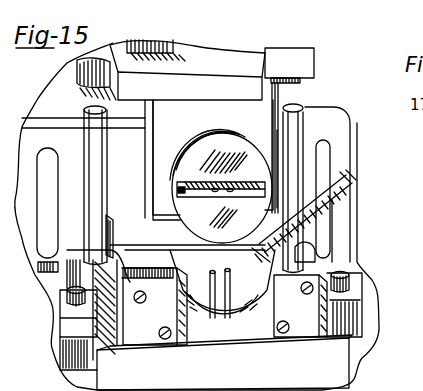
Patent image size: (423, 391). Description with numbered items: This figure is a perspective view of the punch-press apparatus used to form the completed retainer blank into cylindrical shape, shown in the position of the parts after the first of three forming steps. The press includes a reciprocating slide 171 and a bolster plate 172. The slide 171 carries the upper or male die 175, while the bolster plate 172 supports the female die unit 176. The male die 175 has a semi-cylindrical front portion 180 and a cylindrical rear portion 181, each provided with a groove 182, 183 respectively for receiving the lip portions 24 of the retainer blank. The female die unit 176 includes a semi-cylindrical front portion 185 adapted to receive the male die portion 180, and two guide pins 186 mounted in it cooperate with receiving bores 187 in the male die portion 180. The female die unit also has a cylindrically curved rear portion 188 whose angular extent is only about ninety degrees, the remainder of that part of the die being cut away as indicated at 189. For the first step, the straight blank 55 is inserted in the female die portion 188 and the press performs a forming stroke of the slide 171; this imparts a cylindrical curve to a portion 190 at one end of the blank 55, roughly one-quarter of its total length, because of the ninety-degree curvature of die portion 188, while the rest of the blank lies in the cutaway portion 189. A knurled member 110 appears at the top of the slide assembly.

The knurled adjusting cylinder 110 is at (208, 29).
The reciprocating slide 171 is at (305, 67).
The male die 175 is at (262, 112).
The cylindrical rear portion of the male die 181 is at (232, 157).
The groove of the rear male die portion 183 is at (190, 148).
The groove of the front male die portion 182 is at (175, 190).
The receiving bores 187 is at (215, 192).
The semi-cylindrical front portion of the male die 180 is at (190, 225).
The lip portions 24 is at (335, 195).
The blank 55 is at (322, 227).
The cutaway portion 189 is at (318, 253).
The curved end portion of the blank 190 is at (222, 284).
The guide pins 186 is at (198, 325).
The cylindrically curved rear portion of the female die 188 is at (265, 303).
The semi-cylindrical front portion of the female die 185 is at (240, 320).
The female die unit 176 is at (262, 330).
The bolster plate 172 is at (365, 337).